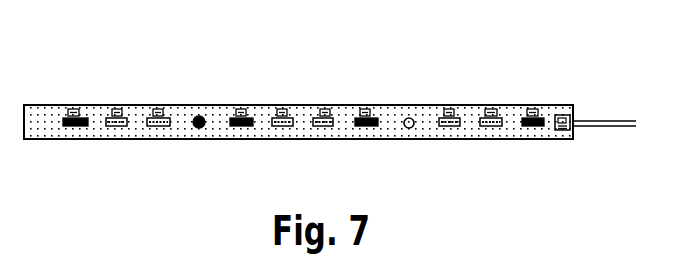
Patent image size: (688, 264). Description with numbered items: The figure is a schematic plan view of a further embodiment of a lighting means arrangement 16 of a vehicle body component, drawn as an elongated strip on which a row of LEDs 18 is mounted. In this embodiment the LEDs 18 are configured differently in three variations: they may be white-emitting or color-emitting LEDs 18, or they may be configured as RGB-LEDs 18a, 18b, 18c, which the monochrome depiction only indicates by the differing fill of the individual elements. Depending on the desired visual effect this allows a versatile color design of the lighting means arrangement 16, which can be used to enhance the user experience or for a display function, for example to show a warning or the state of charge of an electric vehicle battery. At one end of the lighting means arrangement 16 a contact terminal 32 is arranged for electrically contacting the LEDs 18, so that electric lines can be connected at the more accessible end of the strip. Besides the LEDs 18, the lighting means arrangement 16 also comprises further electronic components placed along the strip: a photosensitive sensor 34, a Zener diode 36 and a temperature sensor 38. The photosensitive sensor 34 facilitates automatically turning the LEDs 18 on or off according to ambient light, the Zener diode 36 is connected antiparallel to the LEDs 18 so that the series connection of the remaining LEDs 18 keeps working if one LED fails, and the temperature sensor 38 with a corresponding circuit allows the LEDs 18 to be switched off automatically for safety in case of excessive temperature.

The lighting means arrangement 16 is at (374, 104).
The LEDs 18 is at (248, 129).
The RGB-LED 18a is at (75, 126).
The RGB-LED 18b is at (119, 126).
The RGB-LED 18c is at (160, 126).
The contact terminal 32 is at (567, 115).
The photosensitive sensor 34 is at (196, 119).
The Zener diode 36 is at (283, 108).
The temperature sensor 38 is at (413, 119).